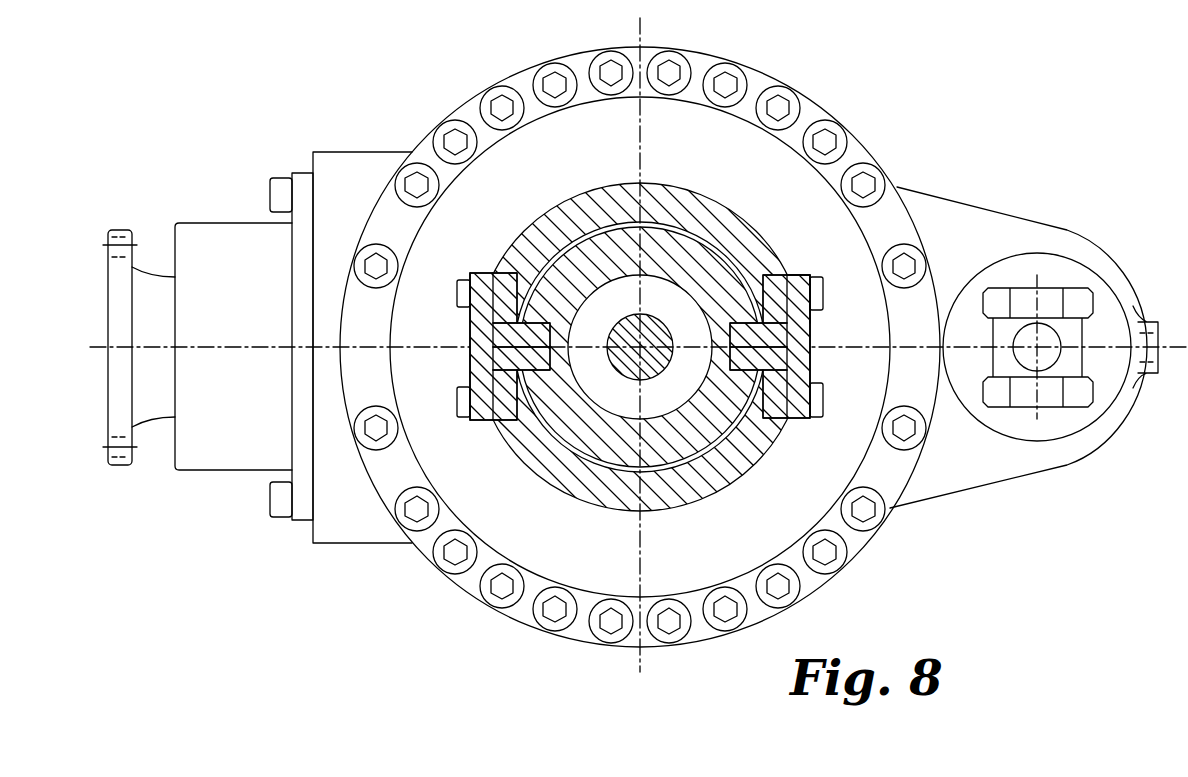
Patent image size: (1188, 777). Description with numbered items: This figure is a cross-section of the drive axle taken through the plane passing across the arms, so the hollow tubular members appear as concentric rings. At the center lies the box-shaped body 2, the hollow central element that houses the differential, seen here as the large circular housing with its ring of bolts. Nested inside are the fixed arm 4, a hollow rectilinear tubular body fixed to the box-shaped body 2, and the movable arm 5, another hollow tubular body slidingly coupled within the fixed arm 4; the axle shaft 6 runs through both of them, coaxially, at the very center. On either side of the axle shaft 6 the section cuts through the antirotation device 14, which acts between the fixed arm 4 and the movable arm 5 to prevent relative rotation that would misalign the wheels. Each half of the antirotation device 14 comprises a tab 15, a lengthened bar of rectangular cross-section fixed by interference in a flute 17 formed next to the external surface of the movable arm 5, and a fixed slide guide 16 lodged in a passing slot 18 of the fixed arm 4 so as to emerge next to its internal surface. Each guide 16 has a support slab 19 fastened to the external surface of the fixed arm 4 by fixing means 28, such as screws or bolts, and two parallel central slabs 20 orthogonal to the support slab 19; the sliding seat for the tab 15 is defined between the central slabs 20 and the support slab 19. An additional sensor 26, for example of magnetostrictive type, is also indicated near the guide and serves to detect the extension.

The box-shaped body 2 is at (679, 144).
The fixed arm 4 is at (693, 188).
The movable arm 5 is at (586, 232).
The axle shaft 6 is at (653, 375).
The antirotation device 14 is at (617, 360).
The tab 15 is at (770, 330).
The fixed slide guide 16 is at (490, 348).
The flute 17 is at (738, 325).
The passing slot 18 is at (515, 320).
The support slab 19 is at (470, 377).
The central slab 20 is at (513, 315).
The additional sensor 26 is at (787, 300).
The fixing means 28 is at (460, 290).